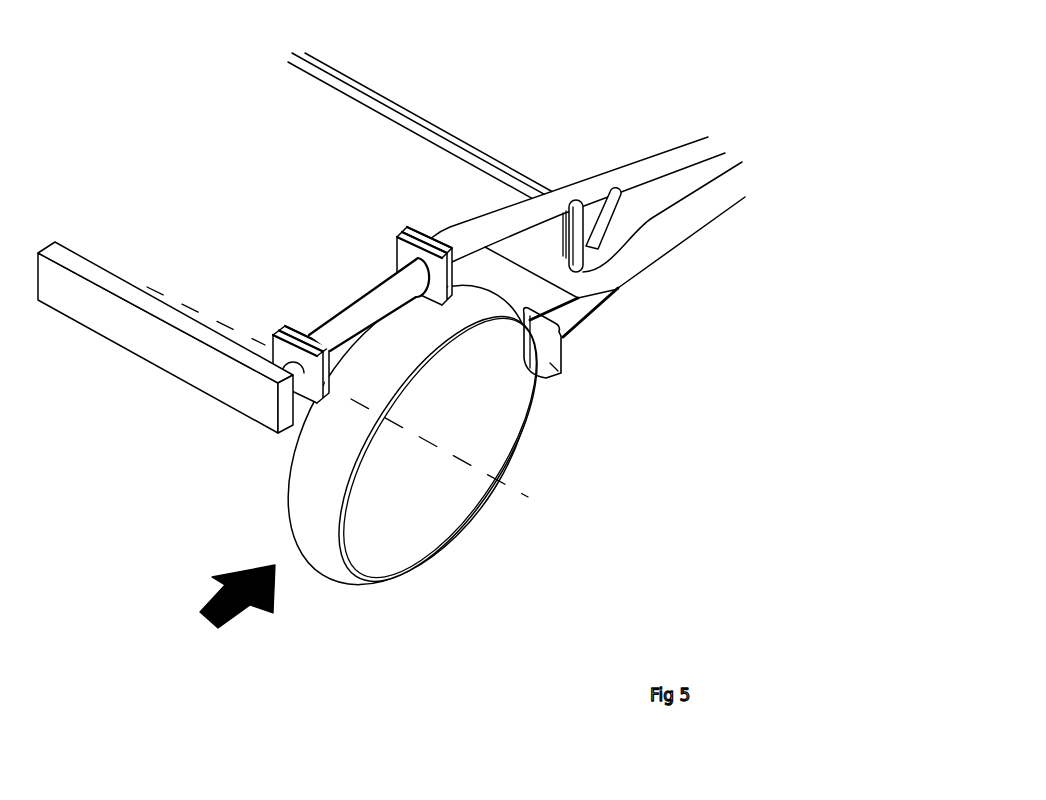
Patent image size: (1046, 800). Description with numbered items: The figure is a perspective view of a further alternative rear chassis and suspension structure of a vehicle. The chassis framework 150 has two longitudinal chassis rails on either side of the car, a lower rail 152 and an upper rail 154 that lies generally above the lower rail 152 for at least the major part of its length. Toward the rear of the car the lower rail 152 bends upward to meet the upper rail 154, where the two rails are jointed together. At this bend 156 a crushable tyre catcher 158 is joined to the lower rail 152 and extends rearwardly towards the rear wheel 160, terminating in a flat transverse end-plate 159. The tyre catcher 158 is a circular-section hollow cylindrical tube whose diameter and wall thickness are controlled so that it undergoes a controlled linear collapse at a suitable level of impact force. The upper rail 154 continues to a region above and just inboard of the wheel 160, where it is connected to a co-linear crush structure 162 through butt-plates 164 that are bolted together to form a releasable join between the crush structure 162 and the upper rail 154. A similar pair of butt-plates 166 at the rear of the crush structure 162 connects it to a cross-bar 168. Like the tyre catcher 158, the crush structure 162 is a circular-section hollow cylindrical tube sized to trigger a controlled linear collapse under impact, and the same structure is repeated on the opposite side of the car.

The chassis framework 150 is at (579, 179).
The lower rail 152 is at (712, 222).
The upper rail 154 is at (659, 152).
The bend 156 is at (608, 286).
The tyre catcher 158 is at (582, 323).
The end-plate 159 is at (557, 370).
The rear wheel 160 is at (455, 527).
The crush structure 162 is at (372, 302).
The butt-plates 164 is at (400, 232).
The butt-plates 166 is at (290, 328).
The cross-bar 168 is at (208, 370).